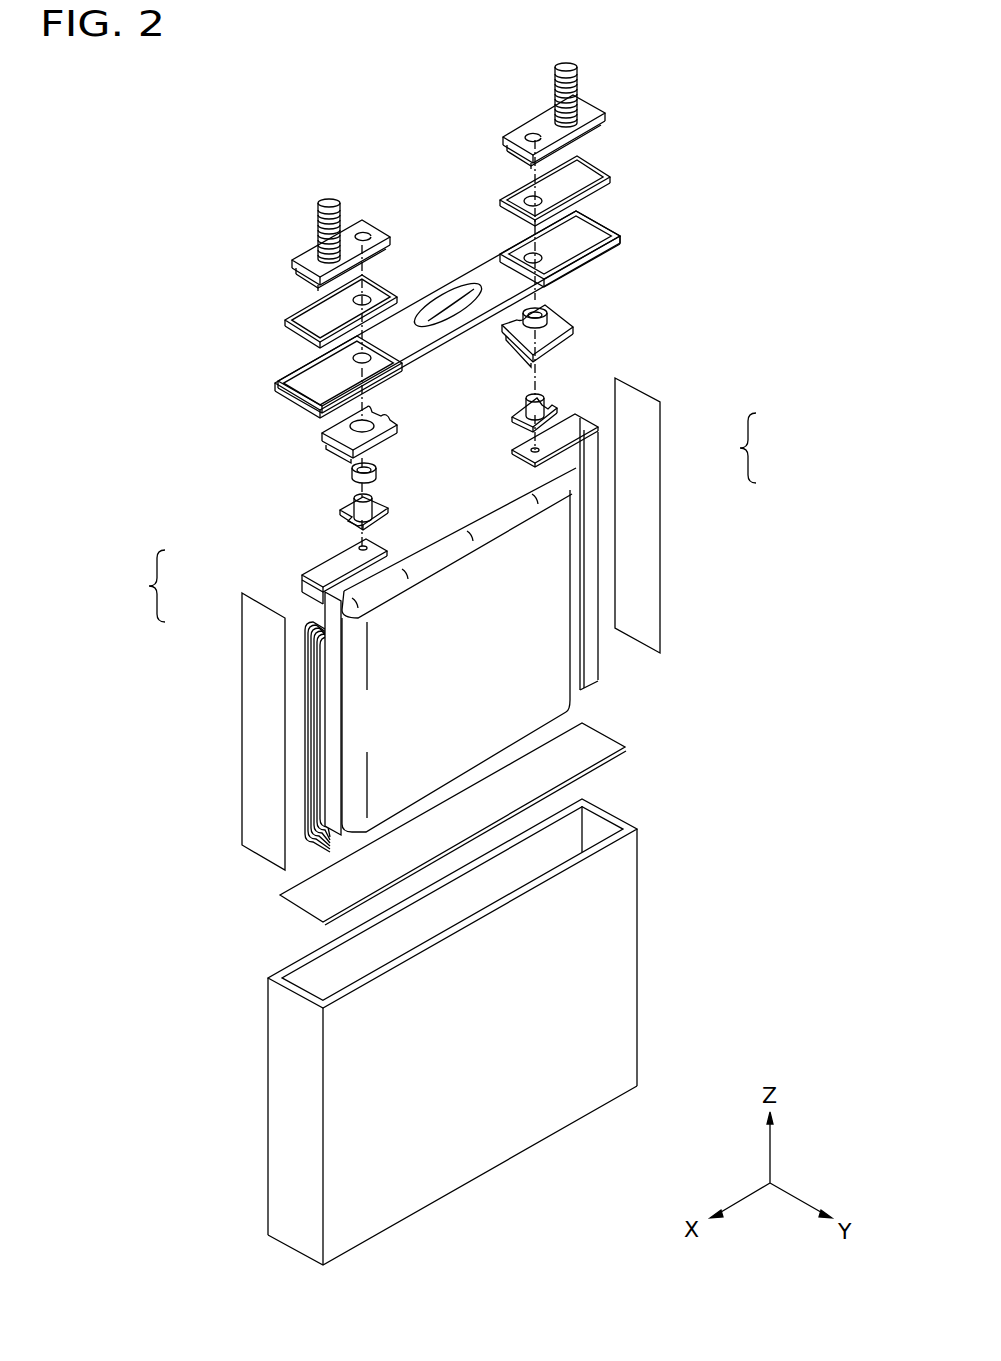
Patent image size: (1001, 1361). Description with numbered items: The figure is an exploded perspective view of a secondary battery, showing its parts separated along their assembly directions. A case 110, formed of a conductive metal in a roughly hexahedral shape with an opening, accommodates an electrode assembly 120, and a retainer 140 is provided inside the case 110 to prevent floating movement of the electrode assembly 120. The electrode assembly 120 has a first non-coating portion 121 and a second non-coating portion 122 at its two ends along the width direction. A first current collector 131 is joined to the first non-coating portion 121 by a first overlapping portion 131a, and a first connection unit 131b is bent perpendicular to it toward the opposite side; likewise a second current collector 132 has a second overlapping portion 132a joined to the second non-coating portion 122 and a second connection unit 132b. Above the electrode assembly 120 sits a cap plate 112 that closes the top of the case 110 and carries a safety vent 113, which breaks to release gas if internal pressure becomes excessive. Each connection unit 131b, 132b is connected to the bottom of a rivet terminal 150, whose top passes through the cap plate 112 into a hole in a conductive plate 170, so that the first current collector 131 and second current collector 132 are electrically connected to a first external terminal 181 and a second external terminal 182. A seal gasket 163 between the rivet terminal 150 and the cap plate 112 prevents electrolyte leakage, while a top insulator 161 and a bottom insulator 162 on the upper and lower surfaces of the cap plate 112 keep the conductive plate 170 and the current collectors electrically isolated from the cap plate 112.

The case 110 is at (640, 922).
The cap plate 112 is at (481, 270).
The safety vent 113 is at (441, 298).
The electrode assembly 120 is at (582, 707).
The first non-coating portion 121 is at (313, 697).
The second non-coating portion 122 is at (575, 557).
The first current collector 131 is at (136, 586).
The first overlapping portion 131a is at (330, 647).
The first connection unit 131b is at (327, 566).
The second current collector 132 is at (764, 448).
The second overlapping portion 132a is at (594, 503).
The second connection unit 132b is at (592, 442).
The retainer 140 is at (307, 902).
The rivet terminal 150 is at (340, 515).
The top insulator 161 is at (290, 322).
The bottom insulator 162 is at (323, 440).
The seal gasket 163 is at (351, 478).
The conductive plate 170 is at (295, 262).
The first external terminal 181 is at (318, 205).
The second external terminal 182 is at (578, 66).